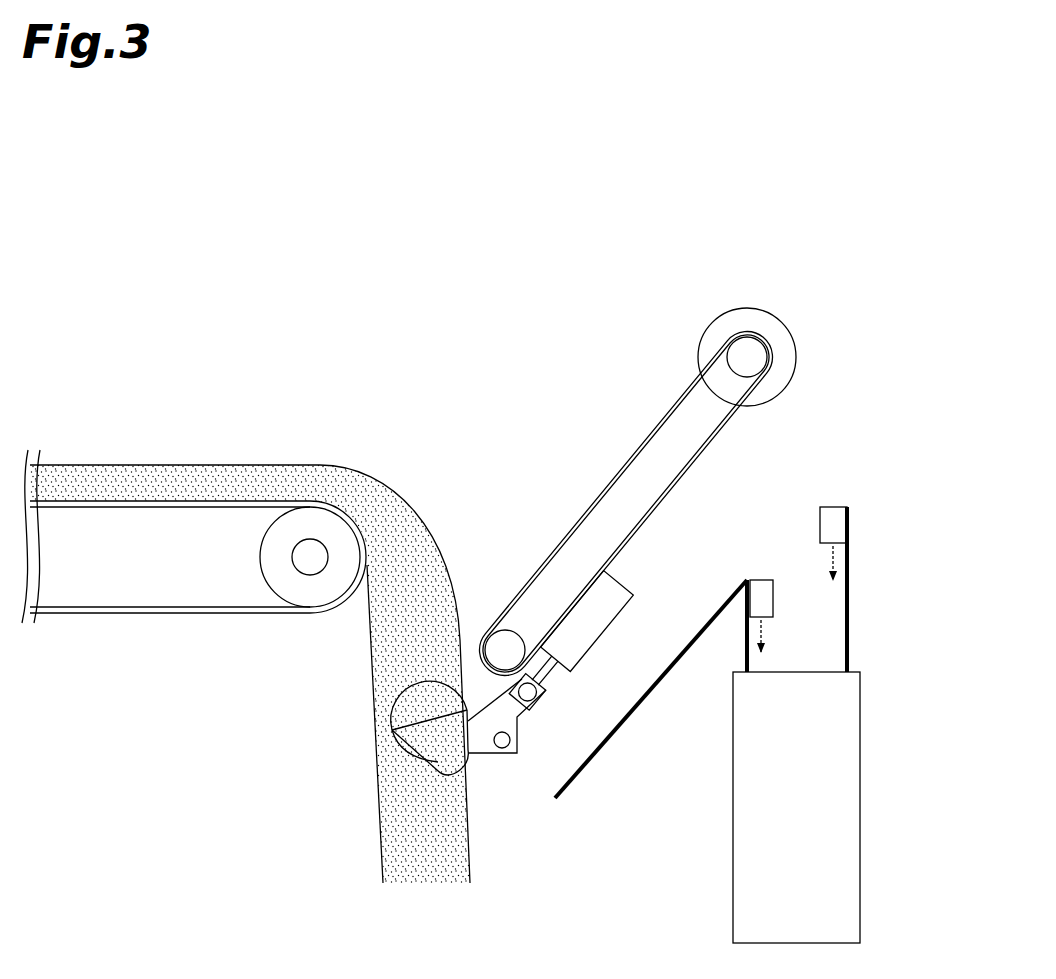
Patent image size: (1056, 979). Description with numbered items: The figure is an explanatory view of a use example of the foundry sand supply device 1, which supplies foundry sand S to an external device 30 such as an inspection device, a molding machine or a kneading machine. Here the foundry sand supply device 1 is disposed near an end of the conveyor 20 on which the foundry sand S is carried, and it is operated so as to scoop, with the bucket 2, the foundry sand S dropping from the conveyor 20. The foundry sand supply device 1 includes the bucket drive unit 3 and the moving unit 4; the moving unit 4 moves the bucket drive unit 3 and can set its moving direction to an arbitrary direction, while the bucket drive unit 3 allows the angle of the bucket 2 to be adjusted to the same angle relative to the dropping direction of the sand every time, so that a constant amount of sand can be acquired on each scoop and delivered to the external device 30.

The foundry sand supply device 1 is at (548, 290).
The bucket 2 is at (423, 762).
The bucket drive unit 3 is at (617, 581).
The moving unit 4 is at (750, 305).
The conveyor 20 is at (172, 615).
The external device 30 is at (890, 700).
The foundry sand S is at (245, 482).